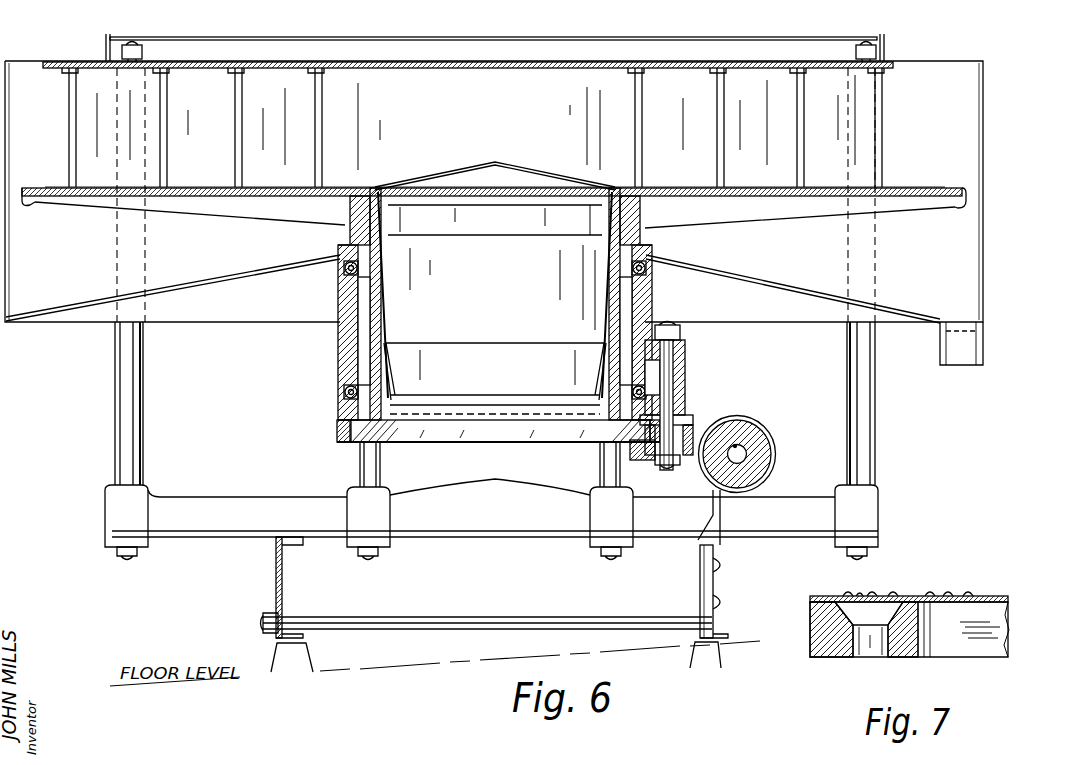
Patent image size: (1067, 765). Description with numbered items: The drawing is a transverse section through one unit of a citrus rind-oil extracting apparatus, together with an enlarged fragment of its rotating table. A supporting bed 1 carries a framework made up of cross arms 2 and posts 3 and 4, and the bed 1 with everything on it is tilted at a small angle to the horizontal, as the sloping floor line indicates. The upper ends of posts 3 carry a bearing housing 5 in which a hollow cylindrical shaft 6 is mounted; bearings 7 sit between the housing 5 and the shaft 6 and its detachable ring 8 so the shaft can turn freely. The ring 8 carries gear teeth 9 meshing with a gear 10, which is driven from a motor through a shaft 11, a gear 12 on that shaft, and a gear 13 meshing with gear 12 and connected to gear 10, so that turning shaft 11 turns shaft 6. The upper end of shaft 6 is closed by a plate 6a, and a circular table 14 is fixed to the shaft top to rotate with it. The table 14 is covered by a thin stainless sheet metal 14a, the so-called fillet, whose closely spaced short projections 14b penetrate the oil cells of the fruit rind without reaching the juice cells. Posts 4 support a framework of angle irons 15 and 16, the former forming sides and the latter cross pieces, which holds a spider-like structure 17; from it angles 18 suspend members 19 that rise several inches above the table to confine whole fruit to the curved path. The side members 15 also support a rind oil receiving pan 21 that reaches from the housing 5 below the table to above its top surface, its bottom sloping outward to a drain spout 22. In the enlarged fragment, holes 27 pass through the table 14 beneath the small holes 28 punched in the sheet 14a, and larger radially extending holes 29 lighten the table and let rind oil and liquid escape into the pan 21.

In FIG. 6, the supporting bed 1 is at (285, 581).
In FIG. 6, the cross arms 2 is at (216, 510).
In FIG. 6, the posts 3 is at (383, 460).
In FIG. 6, the posts 4 is at (133, 424).
In FIG. 6, the bearing housing 5 is at (343, 352).
In FIG. 6, the hollow cylindrical shaft 6 is at (380, 290).
In FIG. 6, the plate 6a is at (508, 162).
In FIG. 6, the bearings 7 is at (345, 270).
In FIG. 6, the detachable ring 8 is at (450, 430).
In FIG. 6, the gear teeth 9 is at (336, 438).
In FIG. 6, the gear 10 is at (692, 425).
In FIG. 6, the shaft 11 is at (745, 446).
In FIG. 6, the gear 12 is at (775, 460).
In FIG. 6, the gear 13 is at (640, 460).
In FIG. 6, the circular table 14 is at (323, 212).
In FIG. 7, the circular table 14 is at (814, 652).
In FIG. 7, the thin sheet metal 14a is at (845, 600).
In FIG. 7, the short projections 14b is at (935, 597).
In FIG. 6, the angle irons 15 is at (885, 57).
In FIG. 6, the angle irons 16 is at (790, 50).
In FIG. 6, the spider-like structure 17 is at (398, 70).
In FIG. 6, the angles 18 is at (60, 72).
In FIG. 6, the members 19 is at (312, 146).
In FIG. 6, the rind oil receiving pan 21 is at (985, 242).
In FIG. 6, the drain spouts 22 is at (963, 345).
In FIG. 7, the holes 27 is at (873, 645).
In FIG. 7, the small holes 28 is at (862, 597).
In FIG. 7, the radially extending holes 29 is at (960, 645).